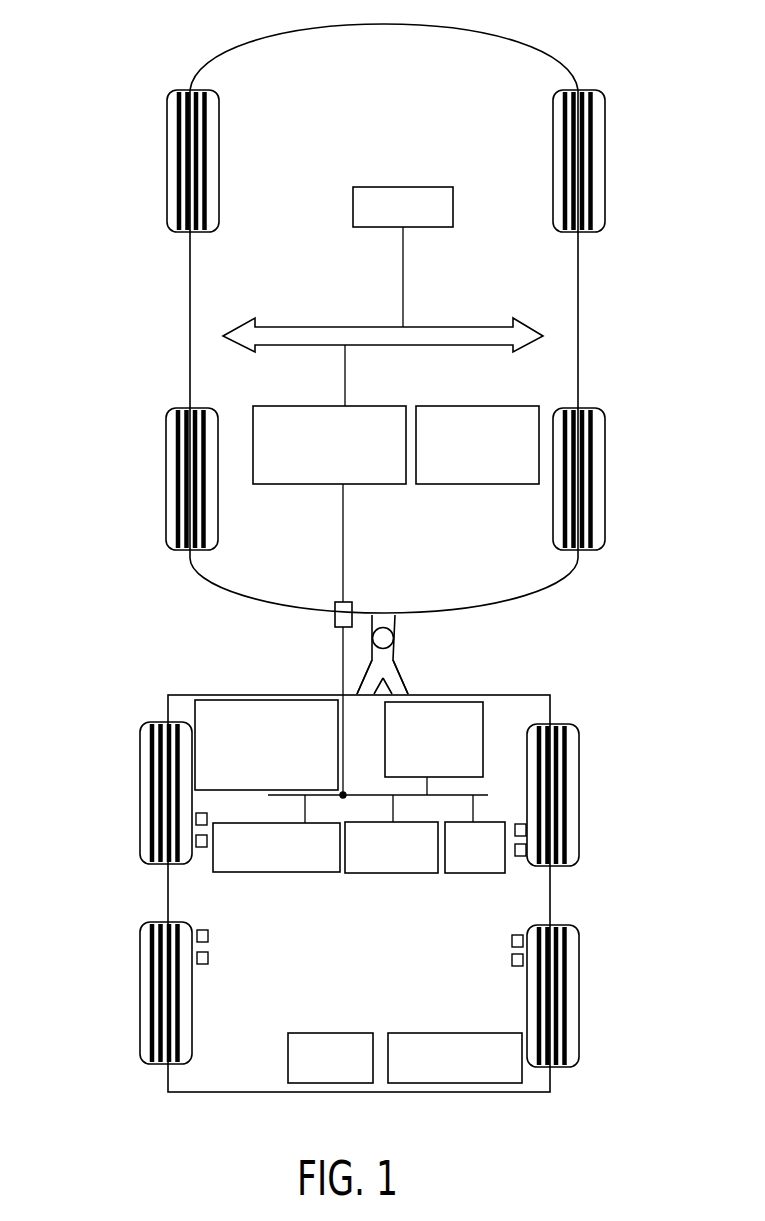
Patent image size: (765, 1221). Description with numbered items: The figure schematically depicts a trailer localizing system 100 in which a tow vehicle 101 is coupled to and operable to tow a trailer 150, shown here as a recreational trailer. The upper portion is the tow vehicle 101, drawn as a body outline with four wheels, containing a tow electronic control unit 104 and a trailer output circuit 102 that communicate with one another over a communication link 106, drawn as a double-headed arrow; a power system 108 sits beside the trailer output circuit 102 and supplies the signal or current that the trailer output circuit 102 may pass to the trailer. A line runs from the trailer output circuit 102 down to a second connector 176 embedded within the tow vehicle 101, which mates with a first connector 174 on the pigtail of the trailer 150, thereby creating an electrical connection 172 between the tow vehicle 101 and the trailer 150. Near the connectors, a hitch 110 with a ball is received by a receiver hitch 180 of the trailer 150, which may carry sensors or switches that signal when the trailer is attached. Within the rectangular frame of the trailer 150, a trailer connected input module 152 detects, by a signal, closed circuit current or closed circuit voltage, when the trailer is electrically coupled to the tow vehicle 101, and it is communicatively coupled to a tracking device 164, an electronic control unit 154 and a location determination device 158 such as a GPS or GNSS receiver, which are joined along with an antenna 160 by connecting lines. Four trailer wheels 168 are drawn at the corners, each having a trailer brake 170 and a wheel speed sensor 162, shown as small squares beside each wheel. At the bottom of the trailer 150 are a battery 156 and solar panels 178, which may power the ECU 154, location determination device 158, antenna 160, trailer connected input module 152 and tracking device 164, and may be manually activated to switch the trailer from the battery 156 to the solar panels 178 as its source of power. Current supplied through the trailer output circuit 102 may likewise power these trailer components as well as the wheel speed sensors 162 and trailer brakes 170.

The trailer localizing system 100 is at (116, 134).
The tow vehicle 101 is at (556, 58).
The trailer output circuit 102 is at (289, 486).
The tow electronic control unit 104 is at (395, 187).
The communication link 106 is at (493, 327).
The power system 108 is at (474, 486).
The hitch 110 is at (390, 619).
The trailer 150 is at (562, 702).
The trailer connected input module 152 is at (222, 700).
The electronic control unit 154 is at (467, 873).
The battery 156 is at (323, 1033).
The location determination device 158 is at (290, 873).
The antenna 160 is at (385, 873).
The wheel speed sensors 162 is at (196, 818).
The tracking device 164 is at (467, 702).
The trailer wheels 168 is at (148, 742).
The trailer brakes 170 is at (196, 840).
The electrical connection 172 is at (342, 700).
The first connector 174 is at (335, 617).
The second connector 176 is at (353, 607).
The solar panels 178 is at (435, 1033).
The receiver hitch 180 is at (386, 675).